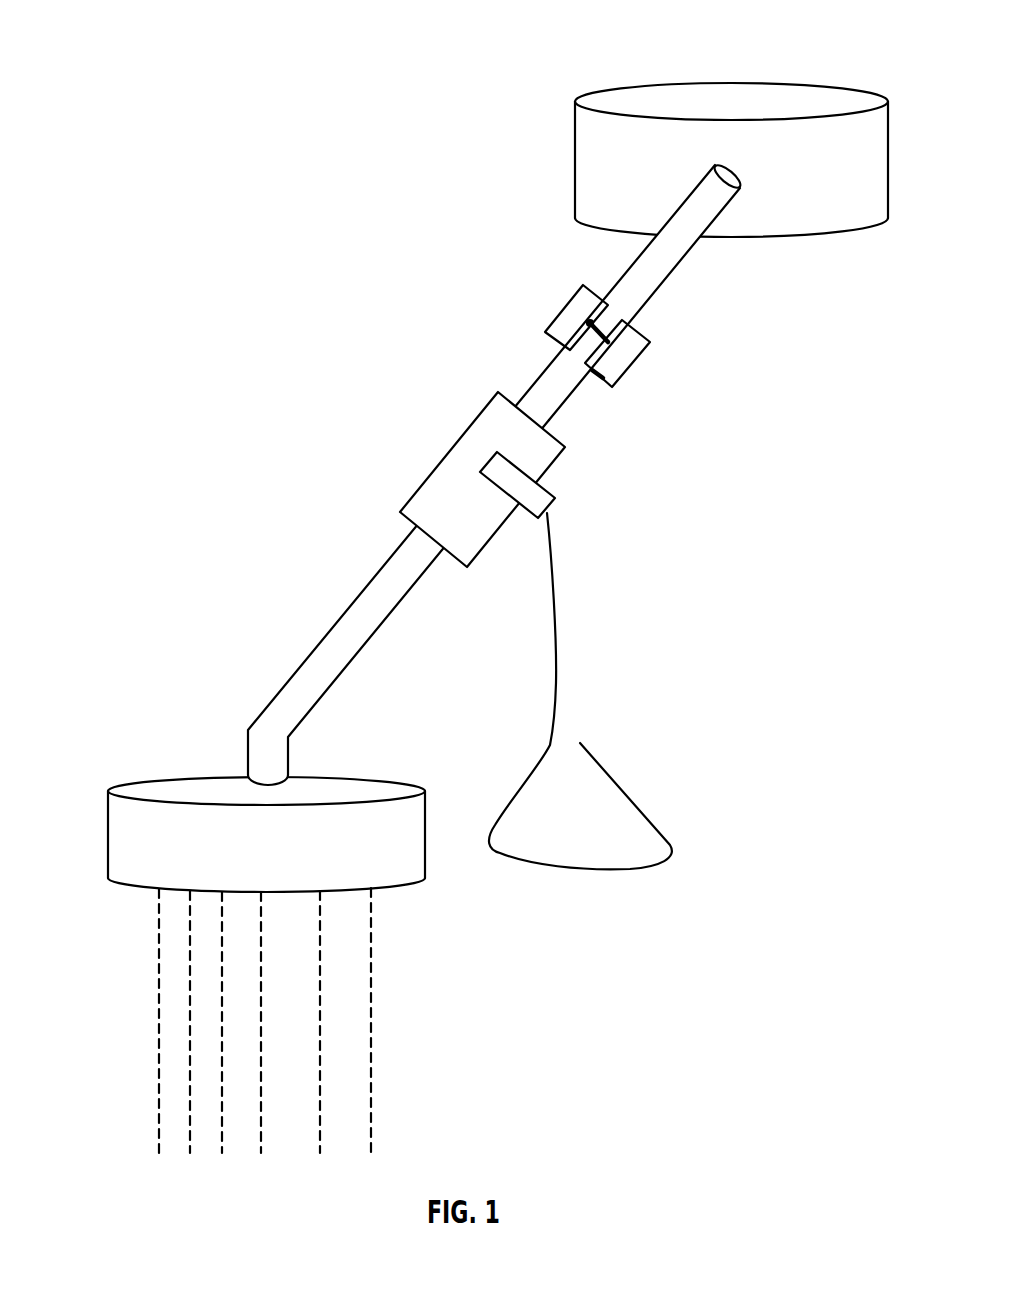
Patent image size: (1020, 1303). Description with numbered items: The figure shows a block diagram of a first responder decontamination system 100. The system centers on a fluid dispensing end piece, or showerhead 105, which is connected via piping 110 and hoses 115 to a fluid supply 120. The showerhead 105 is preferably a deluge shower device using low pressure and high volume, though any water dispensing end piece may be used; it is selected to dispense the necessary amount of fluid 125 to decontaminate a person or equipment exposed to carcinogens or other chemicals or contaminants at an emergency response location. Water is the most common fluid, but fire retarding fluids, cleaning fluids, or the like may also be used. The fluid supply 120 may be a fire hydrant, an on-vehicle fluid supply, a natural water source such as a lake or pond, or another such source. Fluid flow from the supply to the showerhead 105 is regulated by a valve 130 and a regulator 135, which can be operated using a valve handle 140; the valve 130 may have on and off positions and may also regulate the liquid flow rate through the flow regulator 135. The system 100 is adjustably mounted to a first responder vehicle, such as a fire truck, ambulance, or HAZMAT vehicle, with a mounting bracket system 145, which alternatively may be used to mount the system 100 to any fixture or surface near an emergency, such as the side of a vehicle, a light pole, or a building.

The first responder decontamination system 100 is at (278, 45).
The fluid dispensing end piece (showerhead) 105 is at (108, 832).
The piping 110 is at (326, 638).
The hoses 115 is at (650, 300).
The fluid supply 120 is at (575, 140).
The fluid 125 is at (159, 1028).
The valve 130 is at (437, 462).
The regulator 135 is at (552, 490).
The valve handle 140 is at (637, 797).
The mounting bracket system 145 is at (566, 305).